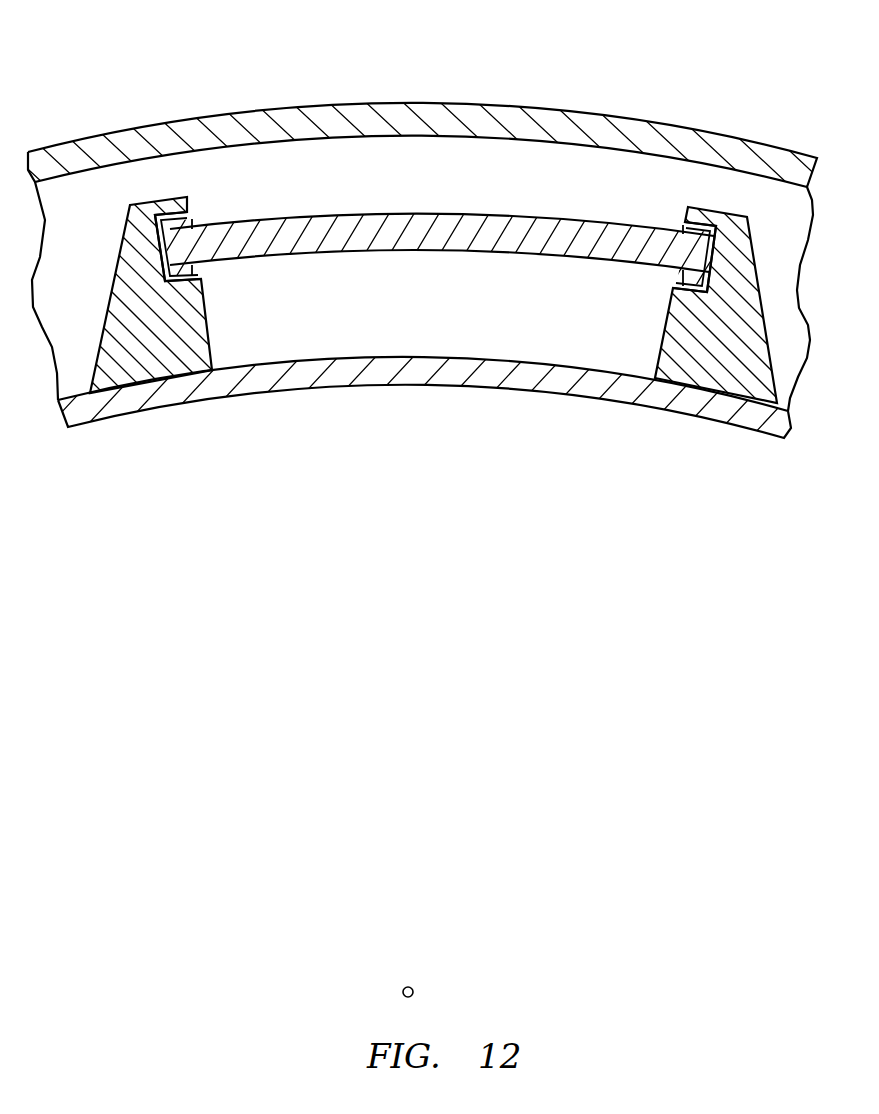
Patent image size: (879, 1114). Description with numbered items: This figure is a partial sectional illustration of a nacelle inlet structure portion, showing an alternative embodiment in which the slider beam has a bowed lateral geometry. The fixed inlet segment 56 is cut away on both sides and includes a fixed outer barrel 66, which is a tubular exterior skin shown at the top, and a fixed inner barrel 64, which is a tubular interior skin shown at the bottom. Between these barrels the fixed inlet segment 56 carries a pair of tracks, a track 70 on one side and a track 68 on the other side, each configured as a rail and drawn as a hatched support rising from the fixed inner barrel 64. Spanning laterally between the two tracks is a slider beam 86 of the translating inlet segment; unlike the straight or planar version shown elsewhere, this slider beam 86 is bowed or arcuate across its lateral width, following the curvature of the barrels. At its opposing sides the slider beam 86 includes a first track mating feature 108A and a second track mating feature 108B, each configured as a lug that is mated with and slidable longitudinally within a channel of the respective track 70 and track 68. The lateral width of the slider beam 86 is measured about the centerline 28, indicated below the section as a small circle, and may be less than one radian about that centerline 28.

The fixed inlet segment 56 is at (748, 99).
The fixed outer barrel 66 is at (613, 115).
The fixed inner barrel 64 is at (609, 400).
The track 70 is at (116, 285).
The track 68 is at (757, 277).
The slider beam 86 is at (372, 214).
The first track mating feature 108A is at (188, 218).
The second track mating feature 108B is at (684, 232).
The centerline 28 is at (414, 990).